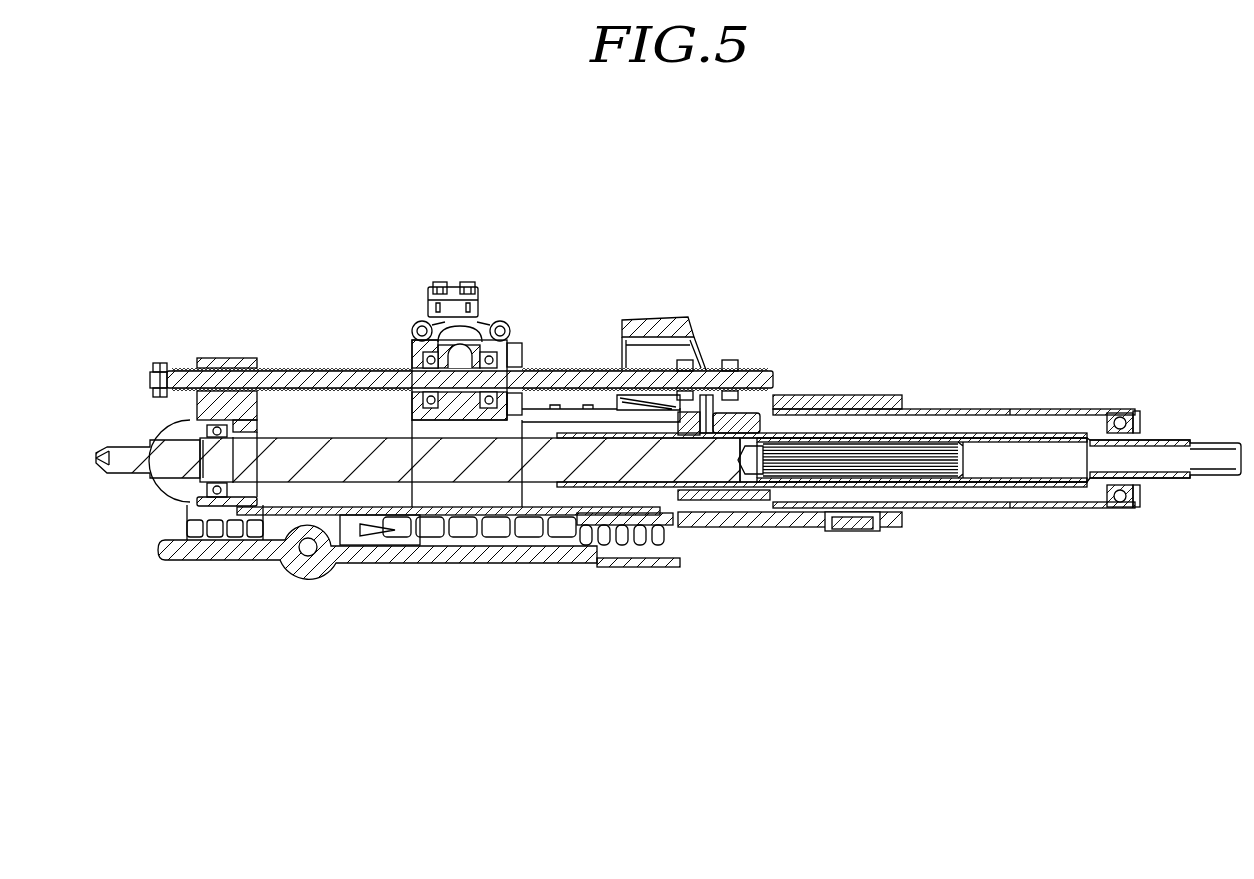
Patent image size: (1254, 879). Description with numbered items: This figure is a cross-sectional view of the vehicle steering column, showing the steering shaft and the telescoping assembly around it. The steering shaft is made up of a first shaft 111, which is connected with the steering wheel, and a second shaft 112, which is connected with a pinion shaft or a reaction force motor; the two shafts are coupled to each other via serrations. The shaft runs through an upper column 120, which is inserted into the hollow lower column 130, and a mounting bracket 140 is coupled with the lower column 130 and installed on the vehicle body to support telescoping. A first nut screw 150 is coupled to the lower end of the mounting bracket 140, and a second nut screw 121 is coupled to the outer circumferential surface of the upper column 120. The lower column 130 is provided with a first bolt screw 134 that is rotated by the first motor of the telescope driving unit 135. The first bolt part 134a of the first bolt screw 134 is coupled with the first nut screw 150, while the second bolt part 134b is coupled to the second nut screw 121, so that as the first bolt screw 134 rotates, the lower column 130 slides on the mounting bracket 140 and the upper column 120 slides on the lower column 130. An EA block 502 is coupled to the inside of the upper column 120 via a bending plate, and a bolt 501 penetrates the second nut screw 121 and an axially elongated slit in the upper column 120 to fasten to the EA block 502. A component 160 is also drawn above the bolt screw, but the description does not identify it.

The first shaft 111 is at (1041, 465).
The second shaft 112 is at (128, 470).
The upper column 120 is at (986, 409).
The second nut screw 121 is at (736, 360).
The lower column 130 is at (762, 528).
The first bolt screw 134 is at (363, 350).
The first bolt part 134a is at (296, 370).
The second bolt part 134b is at (583, 368).
The telescope driving unit 135 is at (490, 319).
The mounting bracket 140 is at (407, 556).
The first nut screw 150 is at (222, 358).
The sensor 160 is at (658, 318).
The bolt 501 is at (742, 410).
The EA block 502 is at (764, 426).